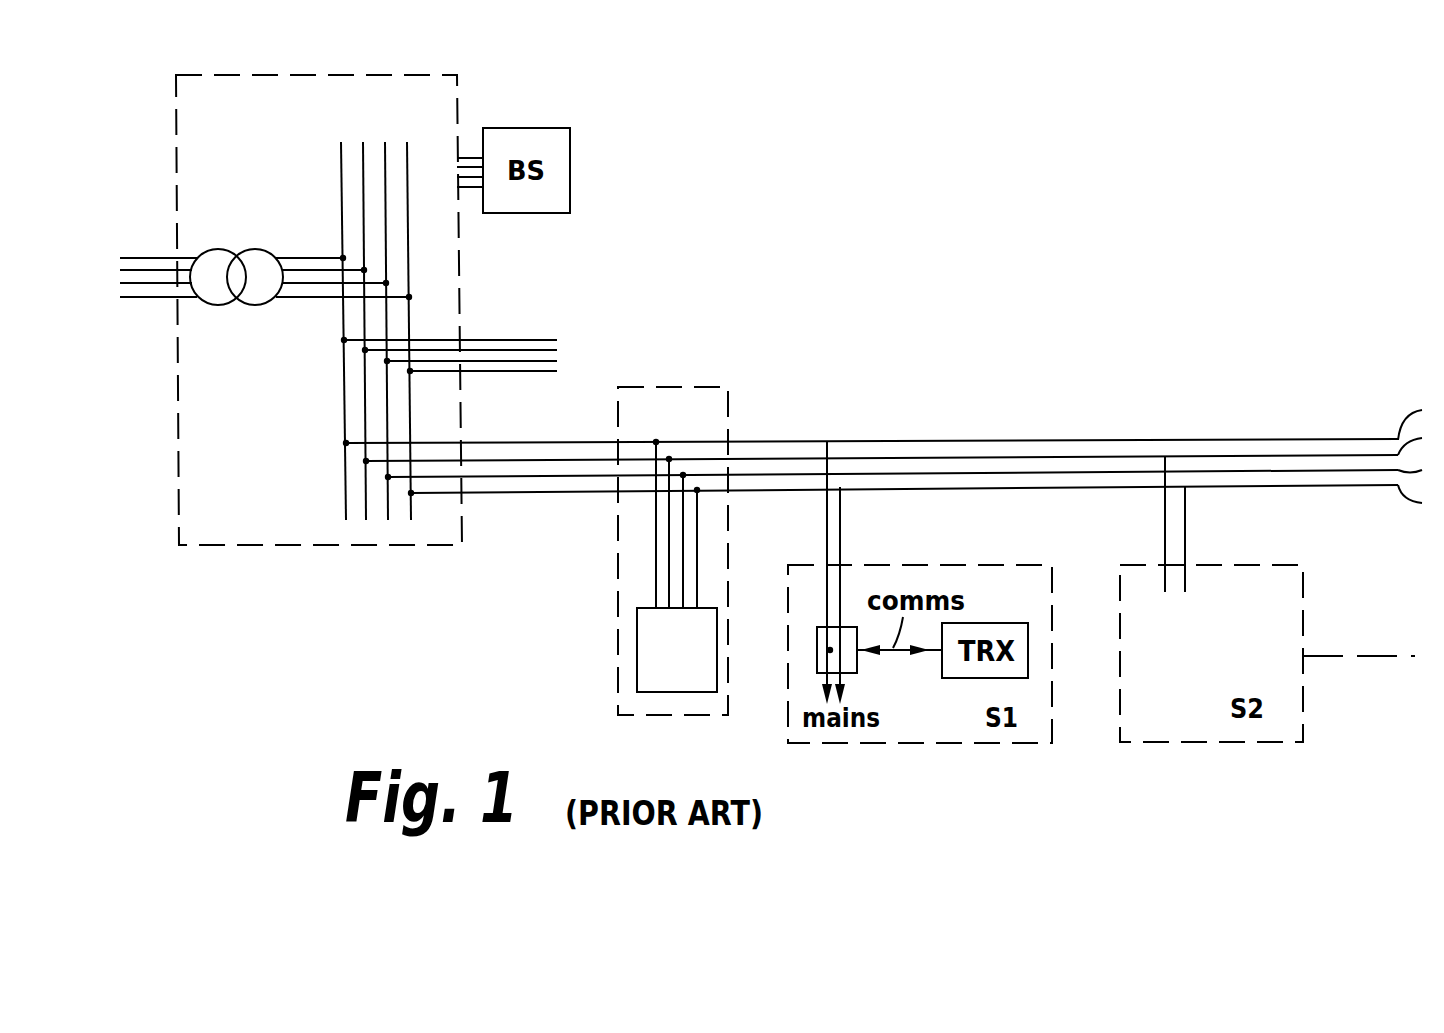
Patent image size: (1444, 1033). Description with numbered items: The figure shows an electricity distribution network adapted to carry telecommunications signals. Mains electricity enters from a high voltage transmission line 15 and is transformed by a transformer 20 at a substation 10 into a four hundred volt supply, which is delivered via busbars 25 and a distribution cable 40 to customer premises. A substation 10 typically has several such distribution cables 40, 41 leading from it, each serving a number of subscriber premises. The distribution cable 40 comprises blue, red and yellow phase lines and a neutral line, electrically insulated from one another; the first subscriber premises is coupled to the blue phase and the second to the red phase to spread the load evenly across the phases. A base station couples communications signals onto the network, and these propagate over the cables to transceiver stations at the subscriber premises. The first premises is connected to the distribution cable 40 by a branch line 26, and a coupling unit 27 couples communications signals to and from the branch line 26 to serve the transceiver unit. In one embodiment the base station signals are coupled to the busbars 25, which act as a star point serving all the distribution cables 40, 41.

The substation 10 is at (236, 507).
The high voltage transmission line 15 is at (110, 275).
The transformer 20 is at (219, 300).
The busbars 25 is at (326, 490).
The branch line 26 is at (843, 538).
The coupling unit 27 is at (815, 643).
The distribution cable 40 is at (551, 506).
The distribution cable 41 is at (559, 324).